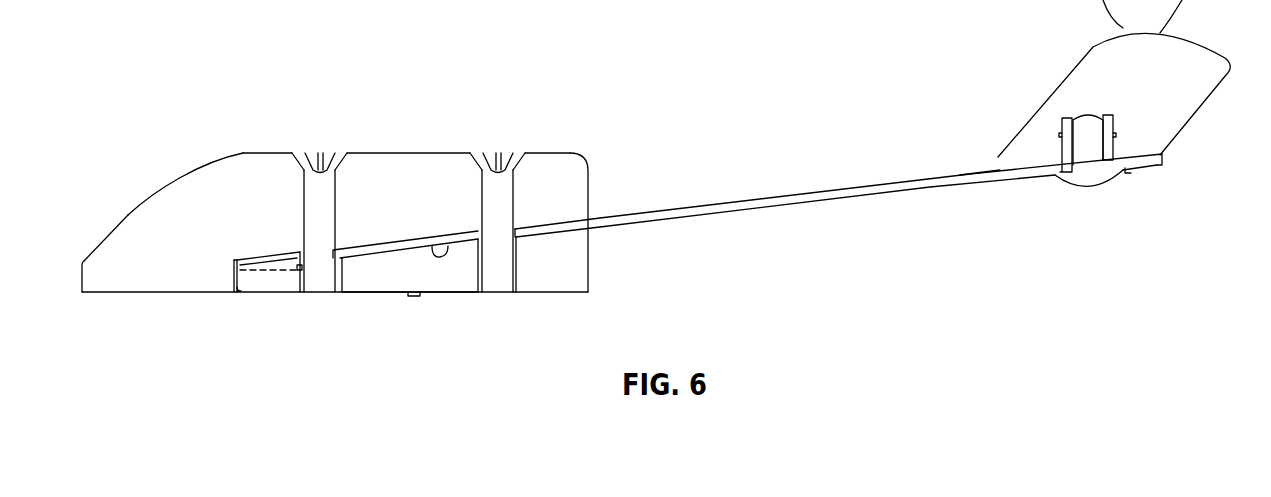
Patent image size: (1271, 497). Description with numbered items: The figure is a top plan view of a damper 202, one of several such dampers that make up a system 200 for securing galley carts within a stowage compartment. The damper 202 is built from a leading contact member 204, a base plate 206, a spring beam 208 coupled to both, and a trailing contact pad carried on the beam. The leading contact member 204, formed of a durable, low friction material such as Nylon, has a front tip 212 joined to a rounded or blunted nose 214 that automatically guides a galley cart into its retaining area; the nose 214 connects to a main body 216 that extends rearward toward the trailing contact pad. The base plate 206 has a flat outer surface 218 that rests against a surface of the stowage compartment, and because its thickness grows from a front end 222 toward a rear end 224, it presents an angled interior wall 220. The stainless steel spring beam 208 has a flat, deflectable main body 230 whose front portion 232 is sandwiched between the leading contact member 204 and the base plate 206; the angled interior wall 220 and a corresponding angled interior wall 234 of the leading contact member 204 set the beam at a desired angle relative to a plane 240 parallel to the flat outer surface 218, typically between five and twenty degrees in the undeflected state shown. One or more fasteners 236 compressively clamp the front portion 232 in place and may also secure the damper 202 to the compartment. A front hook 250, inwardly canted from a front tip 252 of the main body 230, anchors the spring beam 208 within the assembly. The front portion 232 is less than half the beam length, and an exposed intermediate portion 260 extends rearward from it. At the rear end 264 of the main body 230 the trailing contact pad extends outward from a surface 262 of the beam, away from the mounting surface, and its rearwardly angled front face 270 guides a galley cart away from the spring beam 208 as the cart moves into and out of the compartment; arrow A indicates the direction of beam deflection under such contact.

The system 200 is at (1078, 187).
The damper 202 is at (100, 116).
The leading contact member 204 is at (103, 238).
The base plate 206 is at (443, 295).
The spring beam 208 is at (809, 212).
The front tip 212 is at (82, 284).
The nose 214 is at (127, 213).
The main body 216 is at (387, 152).
The flat outer surface 218 is at (378, 295).
The angled interior wall 220 is at (440, 257).
The front end 222 is at (247, 290).
The rear end 224 is at (588, 268).
The main body 230 is at (680, 213).
The front portion 232 is at (412, 296).
The angled interior wall 234 is at (385, 240).
The fasteners 236 is at (294, 152).
The plane 240 is at (288, 273).
The front hook 250 is at (237, 291).
The front tip 252 is at (237, 262).
The exposed intermediate portion 260 is at (713, 222).
The surface 262 is at (995, 170).
The rear end 264 is at (1142, 167).
The rearwardly angled front face 270 is at (1055, 87).
The direction of motion A is at (993, 198).